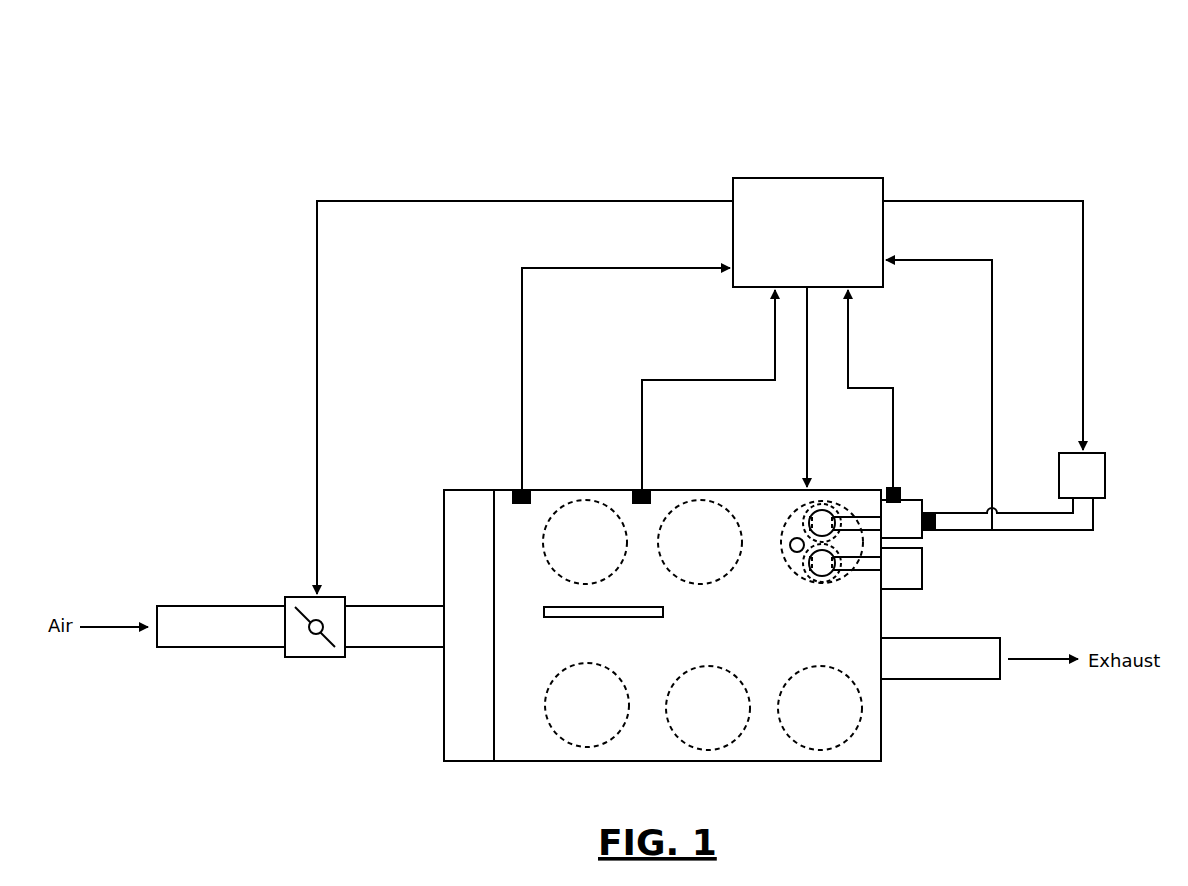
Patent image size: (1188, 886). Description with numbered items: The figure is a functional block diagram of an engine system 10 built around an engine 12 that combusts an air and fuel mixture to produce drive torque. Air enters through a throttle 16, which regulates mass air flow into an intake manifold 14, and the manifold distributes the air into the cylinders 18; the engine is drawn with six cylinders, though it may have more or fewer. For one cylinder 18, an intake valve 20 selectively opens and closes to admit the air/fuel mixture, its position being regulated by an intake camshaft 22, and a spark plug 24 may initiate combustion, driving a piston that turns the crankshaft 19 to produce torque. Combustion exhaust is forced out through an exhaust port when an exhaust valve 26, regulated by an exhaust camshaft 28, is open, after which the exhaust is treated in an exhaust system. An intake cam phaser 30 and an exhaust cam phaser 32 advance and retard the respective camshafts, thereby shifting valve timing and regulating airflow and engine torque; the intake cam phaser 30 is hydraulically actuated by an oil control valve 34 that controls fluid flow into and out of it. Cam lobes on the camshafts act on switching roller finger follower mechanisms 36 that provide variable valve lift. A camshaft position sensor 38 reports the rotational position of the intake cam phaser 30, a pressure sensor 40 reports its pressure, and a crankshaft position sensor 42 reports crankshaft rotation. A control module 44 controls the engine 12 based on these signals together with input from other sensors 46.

The engine system 10 is at (591, 82).
The engine 12 is at (846, 762).
The intake manifold 14 is at (468, 762).
The throttle 16 is at (335, 658).
The cylinder 18 is at (796, 588).
The crankshaft 19 is at (565, 607).
The intake valve 20 is at (812, 512).
The intake camshaft 22 is at (866, 517).
The spark plug 24 is at (793, 551).
The exhaust valve 26 is at (822, 580).
The exhaust camshaft 28 is at (872, 574).
The intake cam phaser 30 is at (910, 500).
The exhaust cam phaser 32 is at (912, 590).
The oil control valve 34 is at (1105, 453).
The switching roller finger follower mechanism 36 is at (838, 505).
The camshaft position sensor 38 is at (889, 488).
The pressure sensor 40 is at (937, 515).
The crankshaft position sensor 42 is at (518, 490).
The control module 44 is at (807, 178).
The other sensors 46 is at (637, 490).